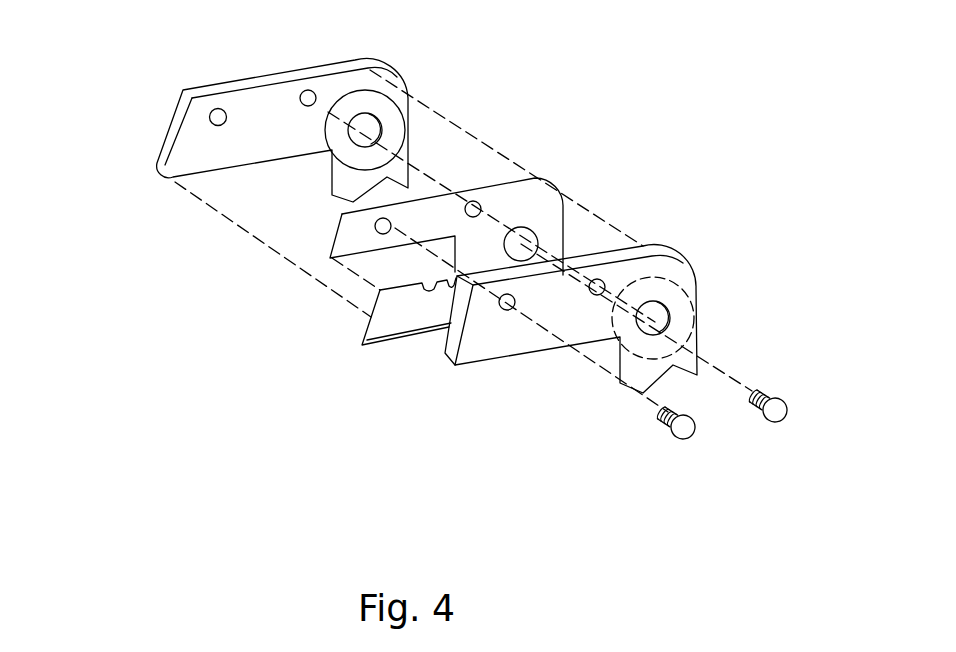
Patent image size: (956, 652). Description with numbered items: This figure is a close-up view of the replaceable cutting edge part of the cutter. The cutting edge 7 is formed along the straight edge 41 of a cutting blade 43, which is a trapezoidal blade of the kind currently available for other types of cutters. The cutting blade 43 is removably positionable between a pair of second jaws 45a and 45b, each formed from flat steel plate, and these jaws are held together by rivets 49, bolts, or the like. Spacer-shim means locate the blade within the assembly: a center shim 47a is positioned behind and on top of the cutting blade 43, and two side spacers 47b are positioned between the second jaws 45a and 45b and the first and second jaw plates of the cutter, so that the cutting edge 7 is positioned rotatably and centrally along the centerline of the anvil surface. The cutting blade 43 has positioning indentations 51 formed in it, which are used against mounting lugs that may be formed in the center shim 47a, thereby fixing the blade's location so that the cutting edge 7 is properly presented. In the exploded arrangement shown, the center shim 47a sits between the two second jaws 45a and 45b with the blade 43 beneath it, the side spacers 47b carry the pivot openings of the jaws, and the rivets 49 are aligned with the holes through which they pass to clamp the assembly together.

The cutting edge 7 is at (373, 282).
The straight edge 41 is at (433, 335).
The cutting blade 43 is at (373, 282).
The second jaw 45a is at (508, 347).
The second jaw 45b is at (203, 148).
The center shim 47a is at (540, 217).
The side spacer 47b is at (395, 120).
The rivet 49 is at (683, 432).
The positioning indentation 51 is at (428, 282).